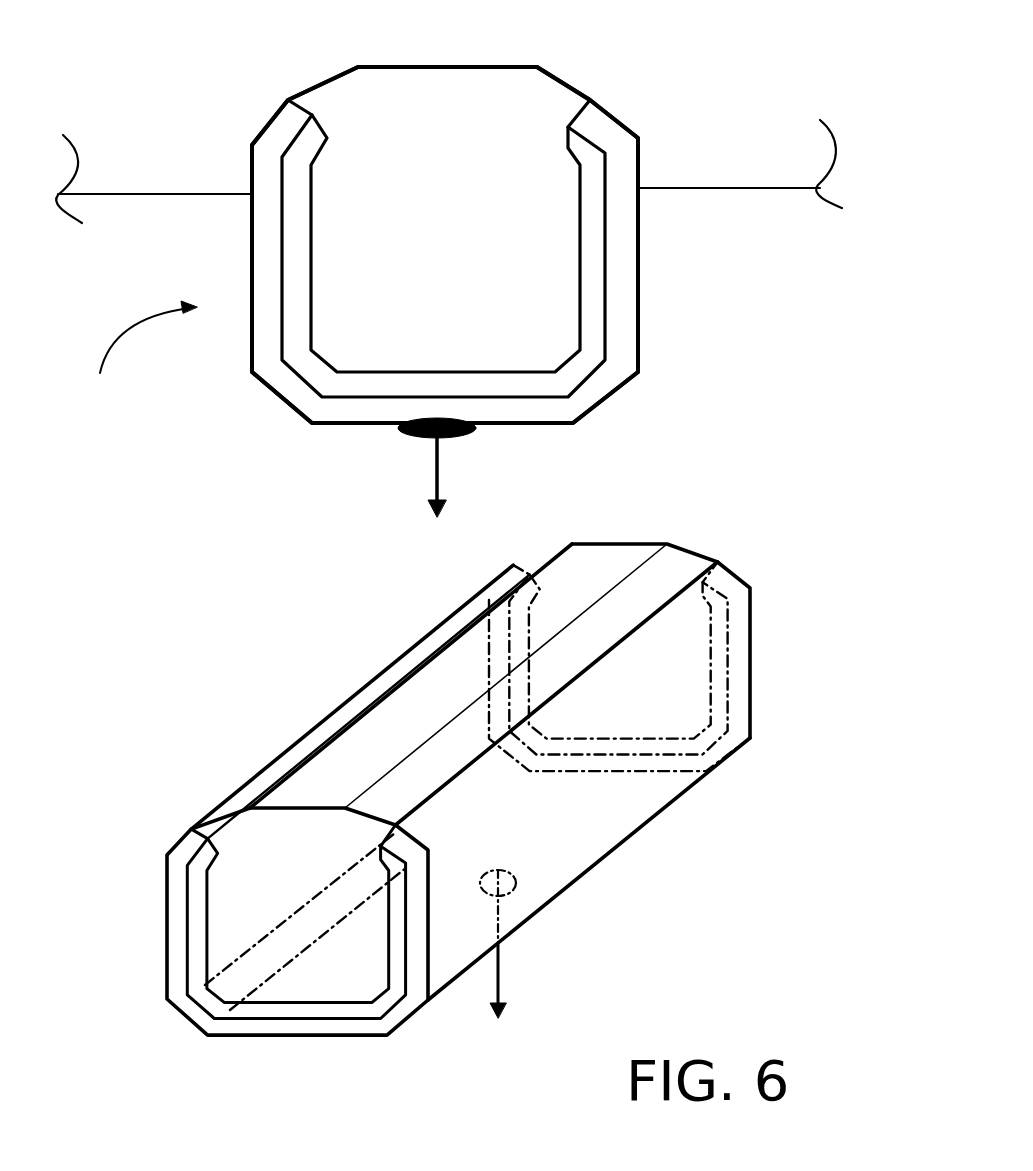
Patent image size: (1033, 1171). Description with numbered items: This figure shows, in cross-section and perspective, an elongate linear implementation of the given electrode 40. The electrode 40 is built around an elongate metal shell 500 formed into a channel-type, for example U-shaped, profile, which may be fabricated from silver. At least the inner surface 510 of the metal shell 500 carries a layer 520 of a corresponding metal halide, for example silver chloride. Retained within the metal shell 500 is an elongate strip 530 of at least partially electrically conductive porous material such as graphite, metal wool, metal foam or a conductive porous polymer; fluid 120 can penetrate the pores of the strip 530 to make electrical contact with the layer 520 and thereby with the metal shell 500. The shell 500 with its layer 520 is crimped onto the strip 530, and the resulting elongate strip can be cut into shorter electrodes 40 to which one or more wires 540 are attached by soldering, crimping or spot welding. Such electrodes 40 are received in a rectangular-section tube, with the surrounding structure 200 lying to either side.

The electrode 40 is at (141, 358).
The fluid 120 is at (470, 30).
The substrate sheet 200 is at (183, 258).
The metal shell 500 is at (625, 200).
The inner surface 510 is at (608, 283).
The layer 520 is at (592, 315).
The elongate strip 530 is at (463, 233).
The wires 540 is at (435, 475).